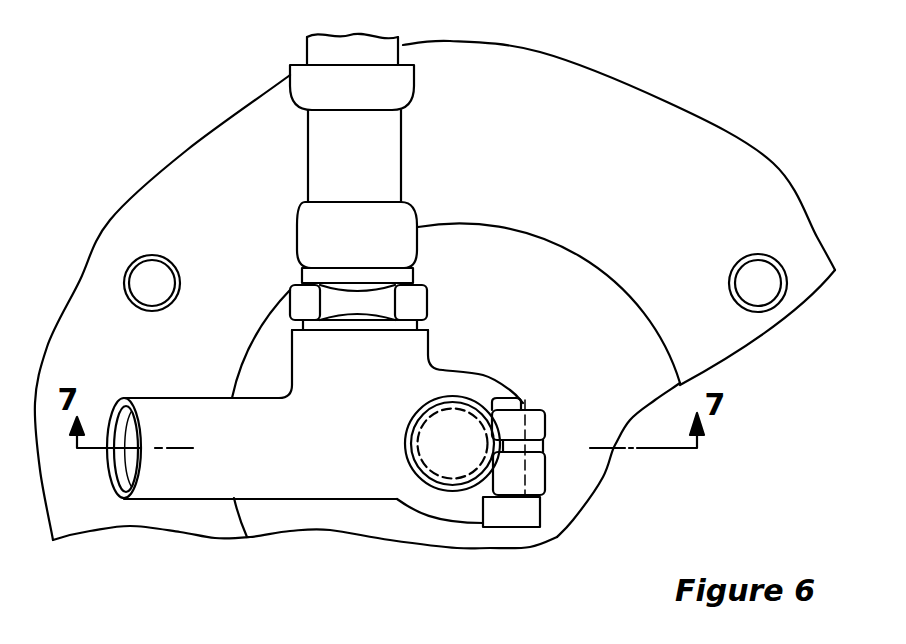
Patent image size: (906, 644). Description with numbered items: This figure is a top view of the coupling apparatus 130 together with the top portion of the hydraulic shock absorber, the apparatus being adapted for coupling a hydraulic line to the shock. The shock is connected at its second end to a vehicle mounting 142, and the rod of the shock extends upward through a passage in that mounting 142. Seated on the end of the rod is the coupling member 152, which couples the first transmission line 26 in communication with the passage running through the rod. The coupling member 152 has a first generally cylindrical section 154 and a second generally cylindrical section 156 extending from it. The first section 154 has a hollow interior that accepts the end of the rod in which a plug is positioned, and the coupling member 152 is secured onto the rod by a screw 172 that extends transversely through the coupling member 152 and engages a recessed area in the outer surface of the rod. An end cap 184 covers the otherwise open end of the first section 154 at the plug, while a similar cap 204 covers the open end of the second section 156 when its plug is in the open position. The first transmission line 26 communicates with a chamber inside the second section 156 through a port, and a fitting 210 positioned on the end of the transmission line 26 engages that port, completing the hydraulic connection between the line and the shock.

The first transmission line 26 is at (318, 50).
The vehicle mounting 142 is at (662, 115).
The fitting 210 is at (308, 237).
The coupling apparatus 130 is at (466, 349).
The coupling member 152 is at (300, 500).
The second generally cylindrical section 156 is at (218, 485).
The cap 204 is at (120, 467).
The end cap 184 is at (432, 460).
The first generally cylindrical section 154 is at (452, 510).
The screw 172 is at (533, 508).